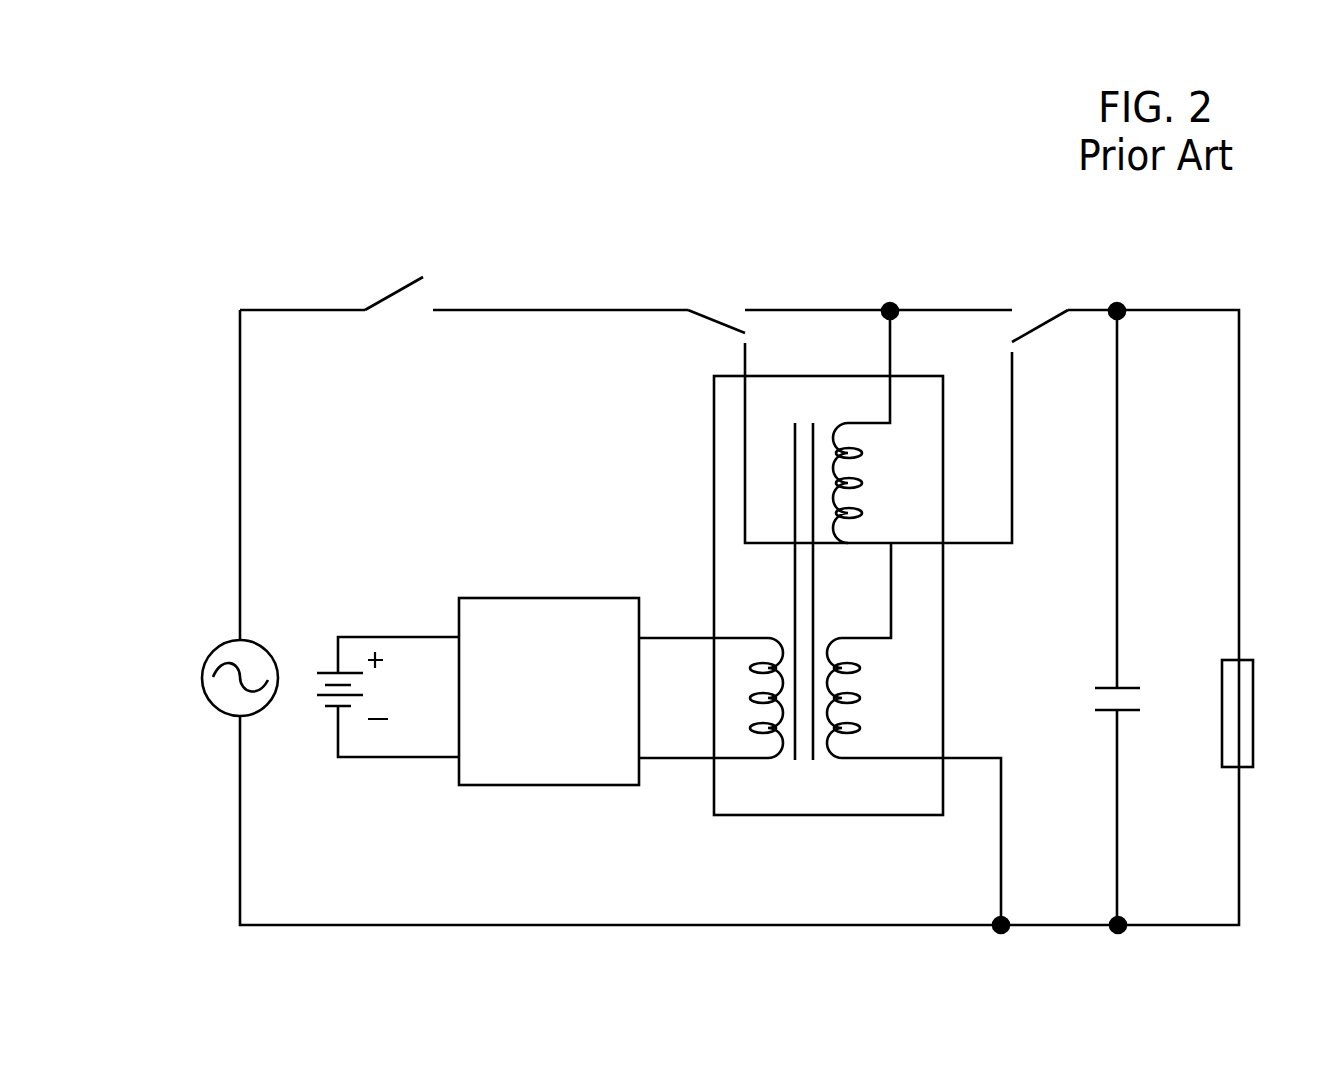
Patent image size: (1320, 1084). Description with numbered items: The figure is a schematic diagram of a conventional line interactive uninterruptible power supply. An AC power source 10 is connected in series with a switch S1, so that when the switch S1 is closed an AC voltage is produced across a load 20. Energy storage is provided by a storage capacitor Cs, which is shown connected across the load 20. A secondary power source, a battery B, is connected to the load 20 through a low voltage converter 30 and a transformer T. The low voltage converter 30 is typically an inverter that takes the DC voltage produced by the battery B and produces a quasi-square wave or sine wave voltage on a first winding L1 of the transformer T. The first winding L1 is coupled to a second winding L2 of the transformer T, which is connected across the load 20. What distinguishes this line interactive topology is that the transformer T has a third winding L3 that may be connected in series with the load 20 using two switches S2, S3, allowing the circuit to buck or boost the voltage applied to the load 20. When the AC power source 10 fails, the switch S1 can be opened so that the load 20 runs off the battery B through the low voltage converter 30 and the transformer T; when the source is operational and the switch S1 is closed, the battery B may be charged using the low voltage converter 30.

The AC power source 10 is at (218, 712).
The load 20 is at (1255, 743).
The low voltage converter 30 is at (593, 785).
The battery B is at (333, 697).
The transformer T is at (843, 815).
The switch S1 is at (455, 268).
The switch S2 is at (734, 295).
The switch S3 is at (1026, 297).
The first winding L1 is at (742, 660).
The second winding L2 is at (883, 699).
The third winding L3 is at (893, 462).
The storage capacitor Cs is at (1123, 698).